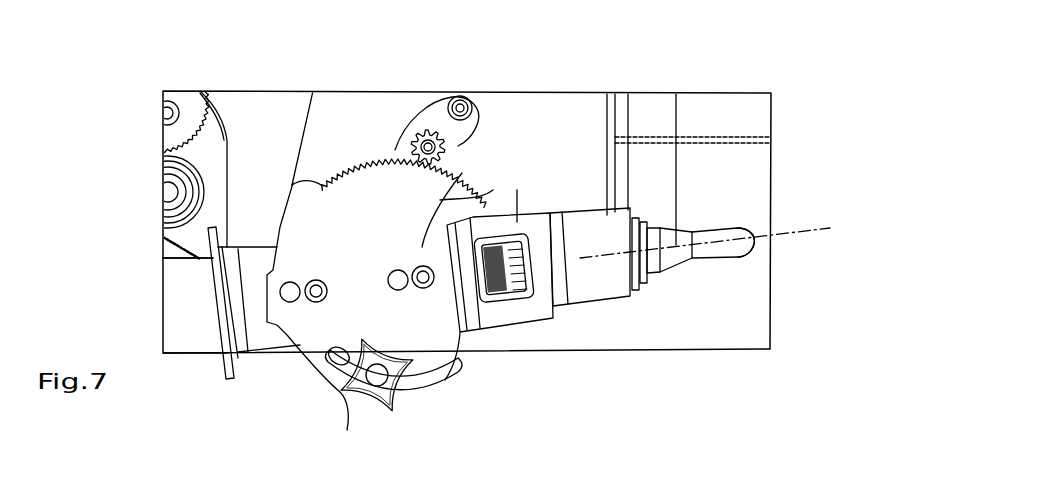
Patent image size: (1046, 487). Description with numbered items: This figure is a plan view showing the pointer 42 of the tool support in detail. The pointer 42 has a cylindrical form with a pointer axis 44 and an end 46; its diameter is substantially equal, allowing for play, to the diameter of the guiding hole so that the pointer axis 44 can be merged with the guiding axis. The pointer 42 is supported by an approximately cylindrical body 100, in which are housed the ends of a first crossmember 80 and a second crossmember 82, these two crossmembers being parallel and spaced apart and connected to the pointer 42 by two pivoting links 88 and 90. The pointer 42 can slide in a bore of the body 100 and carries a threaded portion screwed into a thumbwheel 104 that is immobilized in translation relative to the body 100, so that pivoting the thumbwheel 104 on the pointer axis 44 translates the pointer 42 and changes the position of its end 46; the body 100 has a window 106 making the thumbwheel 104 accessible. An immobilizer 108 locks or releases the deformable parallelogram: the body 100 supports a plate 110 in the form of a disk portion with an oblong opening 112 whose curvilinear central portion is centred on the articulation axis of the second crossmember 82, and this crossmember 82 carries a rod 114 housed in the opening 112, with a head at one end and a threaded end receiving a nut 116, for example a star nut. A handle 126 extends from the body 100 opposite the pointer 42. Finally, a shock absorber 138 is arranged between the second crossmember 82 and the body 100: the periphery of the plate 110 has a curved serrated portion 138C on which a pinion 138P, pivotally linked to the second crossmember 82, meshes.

The pointer 42 is at (717, 282).
The pointer axis 44 is at (812, 228).
The end 46 is at (753, 248).
The first crossmember 80 is at (321, 108).
The second crossmember 82 is at (484, 100).
The pivoting link 88 is at (316, 262).
The pivoting link 90 is at (517, 222).
The body 100 is at (262, 358).
The thumbwheel 104 is at (507, 300).
The window 106 is at (519, 222).
The immobilizer 108 is at (404, 398).
The plate 110 is at (320, 188).
The oblong opening 112 is at (450, 382).
The rod 114 is at (367, 380).
The nut 116 is at (345, 376).
The handle 126 is at (185, 340).
The shock absorber 138 is at (401, 98).
The curved serrated portion 138C is at (423, 246).
The pinion 138P is at (431, 146).